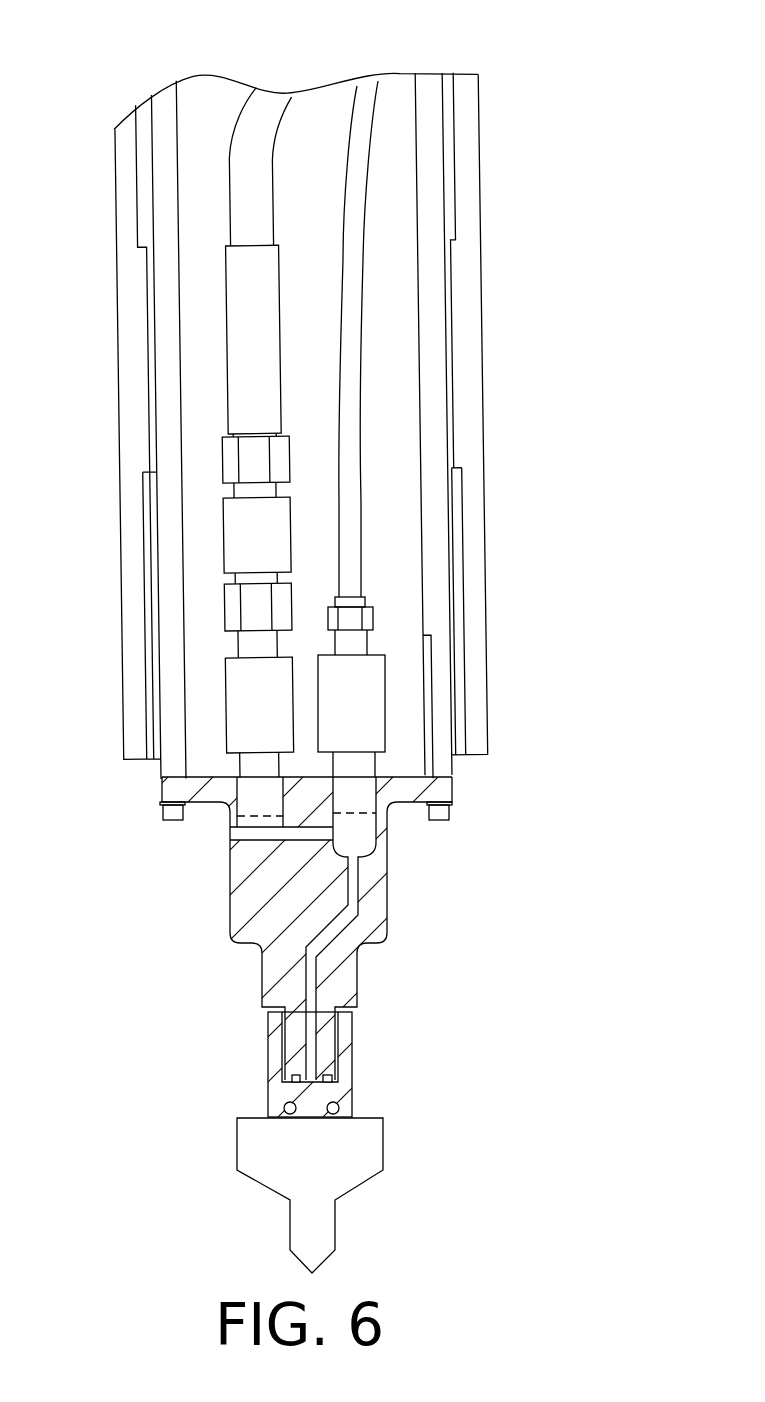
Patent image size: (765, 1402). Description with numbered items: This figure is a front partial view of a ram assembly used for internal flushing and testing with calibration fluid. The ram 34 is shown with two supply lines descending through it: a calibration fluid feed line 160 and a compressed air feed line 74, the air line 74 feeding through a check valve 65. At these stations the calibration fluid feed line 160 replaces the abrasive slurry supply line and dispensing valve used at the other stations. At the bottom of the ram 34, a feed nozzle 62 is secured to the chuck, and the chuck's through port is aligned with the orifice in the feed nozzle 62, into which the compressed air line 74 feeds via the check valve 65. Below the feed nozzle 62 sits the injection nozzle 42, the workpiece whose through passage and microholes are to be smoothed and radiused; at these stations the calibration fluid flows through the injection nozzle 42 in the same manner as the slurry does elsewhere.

The ram 34 is at (435, 411).
The calibration fluid feed line 160 is at (253, 117).
The compressed air line 74 is at (368, 100).
The check valve 65 is at (293, 693).
The feed nozzle 62 is at (352, 1072).
The injection nozzle 42 is at (360, 1150).